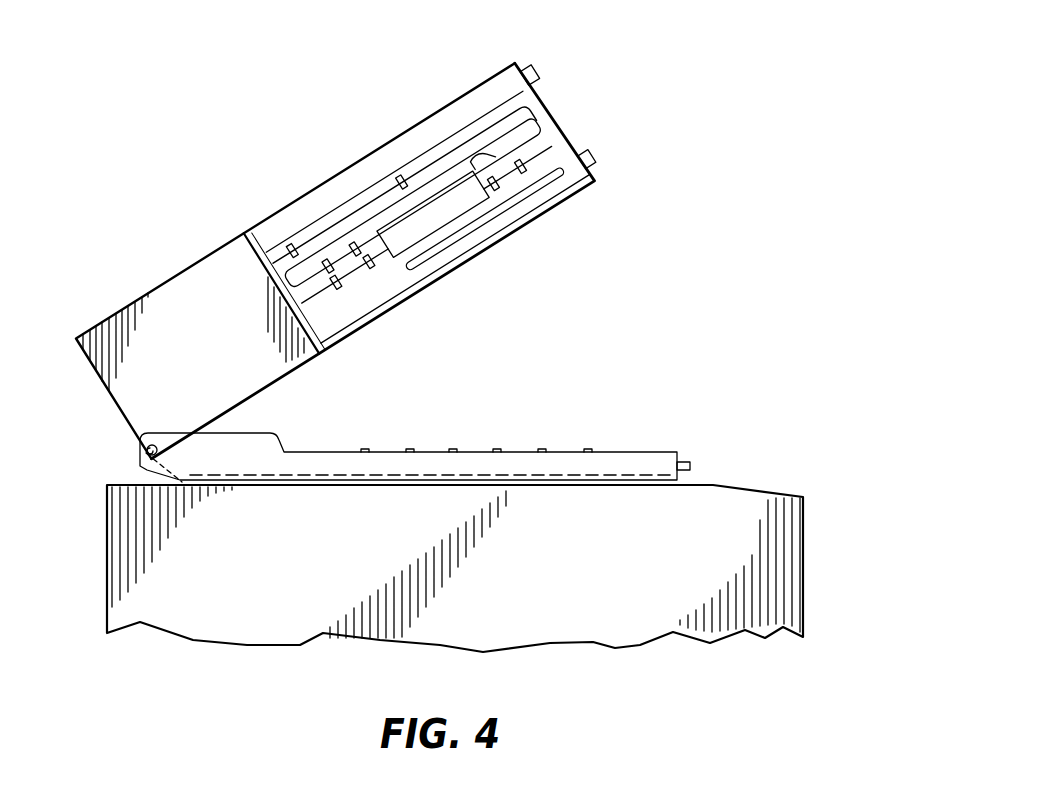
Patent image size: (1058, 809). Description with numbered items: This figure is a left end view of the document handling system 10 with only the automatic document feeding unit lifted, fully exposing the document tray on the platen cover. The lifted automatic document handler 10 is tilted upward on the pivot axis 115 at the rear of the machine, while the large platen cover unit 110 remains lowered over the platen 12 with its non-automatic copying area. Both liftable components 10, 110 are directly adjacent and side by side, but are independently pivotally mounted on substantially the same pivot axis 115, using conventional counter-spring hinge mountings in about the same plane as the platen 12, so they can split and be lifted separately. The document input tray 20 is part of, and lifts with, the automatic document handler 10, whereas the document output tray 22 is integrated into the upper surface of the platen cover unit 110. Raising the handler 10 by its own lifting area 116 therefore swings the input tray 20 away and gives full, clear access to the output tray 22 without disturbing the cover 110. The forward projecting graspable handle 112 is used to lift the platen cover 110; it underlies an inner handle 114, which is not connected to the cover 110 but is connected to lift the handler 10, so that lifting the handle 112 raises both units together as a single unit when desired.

The automatic document handler 10 is at (410, 346).
The platen 12 is at (597, 490).
The document input tray 20 is at (436, 176).
The document output tray 22 is at (524, 444).
The platen cover unit 110 is at (317, 481).
The handle 112 is at (692, 464).
The inner handle 114 is at (602, 152).
The pivot axis 115 is at (126, 443).
The lifting area 116 is at (539, 70).